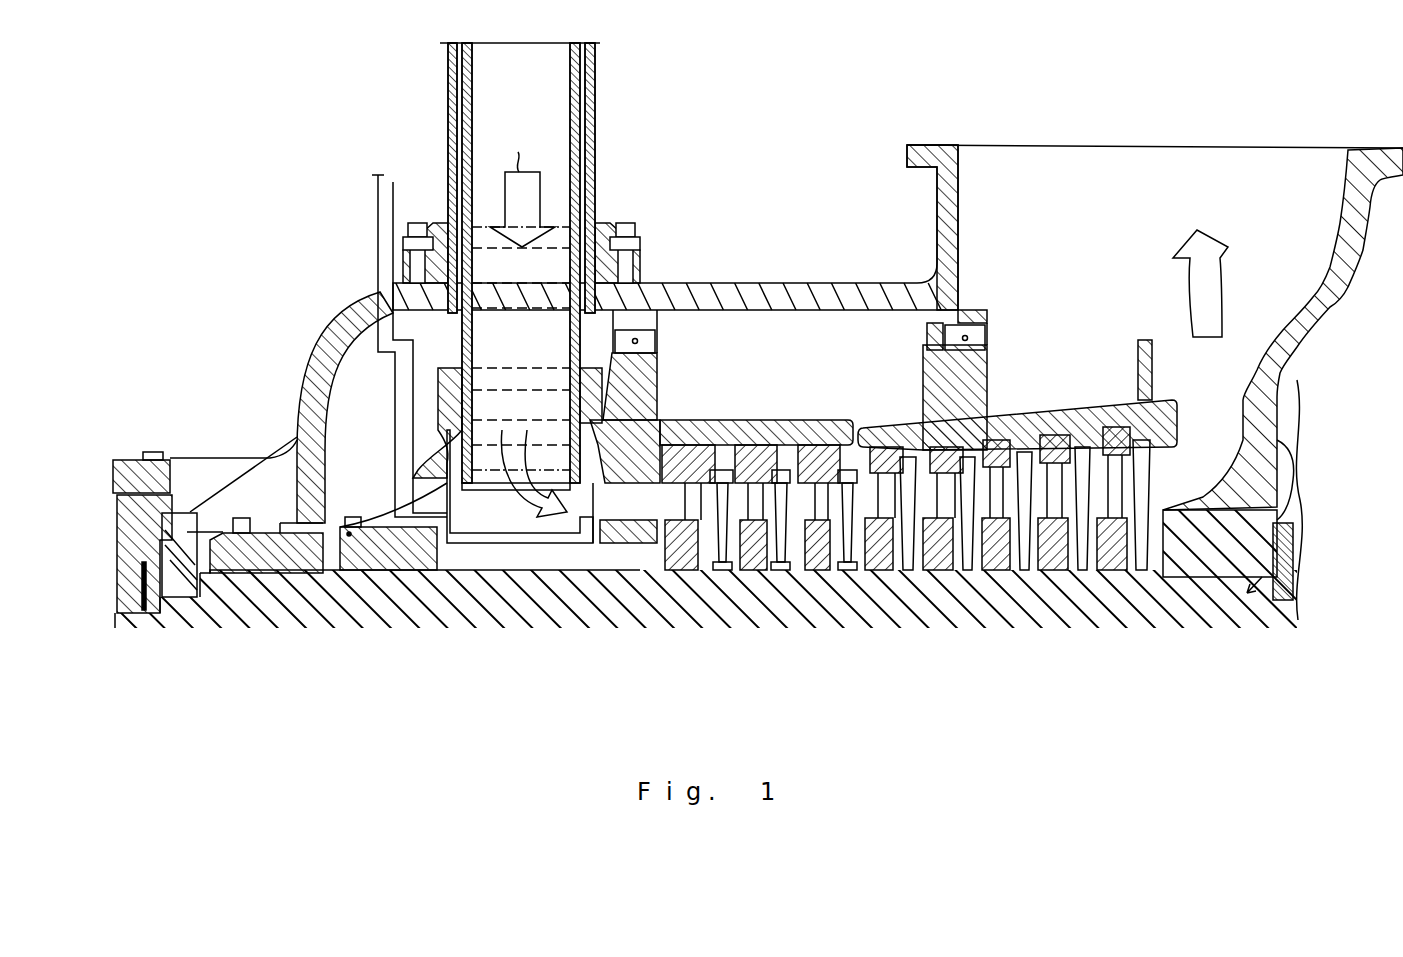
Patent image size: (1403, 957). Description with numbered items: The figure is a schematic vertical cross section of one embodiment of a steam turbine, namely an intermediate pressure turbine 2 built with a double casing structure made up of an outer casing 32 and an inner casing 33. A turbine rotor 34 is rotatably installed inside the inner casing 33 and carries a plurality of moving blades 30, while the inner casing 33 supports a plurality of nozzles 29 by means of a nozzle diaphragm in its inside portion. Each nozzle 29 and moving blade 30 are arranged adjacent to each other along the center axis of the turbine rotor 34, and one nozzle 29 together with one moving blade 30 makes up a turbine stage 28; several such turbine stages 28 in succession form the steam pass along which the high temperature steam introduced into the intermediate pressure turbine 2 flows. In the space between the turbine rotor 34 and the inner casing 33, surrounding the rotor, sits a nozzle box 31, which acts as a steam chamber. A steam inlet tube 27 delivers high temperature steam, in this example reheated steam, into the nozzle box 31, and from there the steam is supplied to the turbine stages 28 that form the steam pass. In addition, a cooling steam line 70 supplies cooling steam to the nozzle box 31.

The intermediate pressure turbine 2 is at (790, 125).
The steam inlet tube 27 is at (456, 110).
The turbine stage 28 is at (780, 692).
The nozzle 29 is at (693, 565).
The moving blade 30 is at (728, 558).
The nozzle box 31 is at (523, 535).
The outer casing 32 is at (742, 283).
The inner casing 33 is at (750, 420).
The turbine rotor 34 is at (1067, 600).
The cooling steam line 70 is at (378, 226).